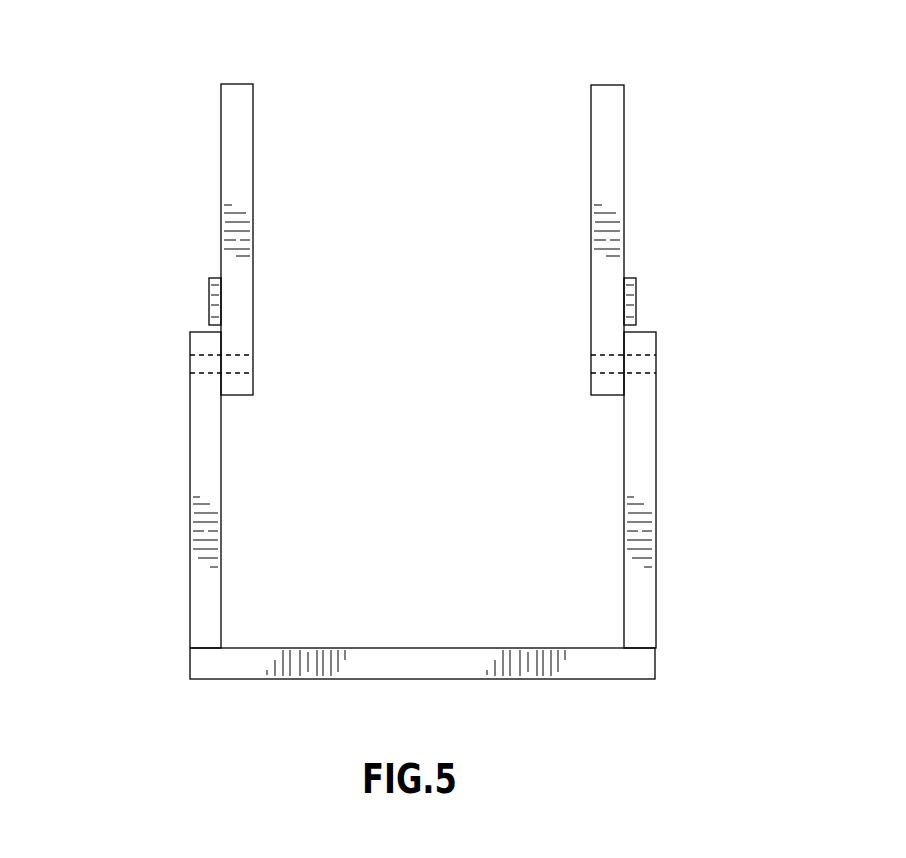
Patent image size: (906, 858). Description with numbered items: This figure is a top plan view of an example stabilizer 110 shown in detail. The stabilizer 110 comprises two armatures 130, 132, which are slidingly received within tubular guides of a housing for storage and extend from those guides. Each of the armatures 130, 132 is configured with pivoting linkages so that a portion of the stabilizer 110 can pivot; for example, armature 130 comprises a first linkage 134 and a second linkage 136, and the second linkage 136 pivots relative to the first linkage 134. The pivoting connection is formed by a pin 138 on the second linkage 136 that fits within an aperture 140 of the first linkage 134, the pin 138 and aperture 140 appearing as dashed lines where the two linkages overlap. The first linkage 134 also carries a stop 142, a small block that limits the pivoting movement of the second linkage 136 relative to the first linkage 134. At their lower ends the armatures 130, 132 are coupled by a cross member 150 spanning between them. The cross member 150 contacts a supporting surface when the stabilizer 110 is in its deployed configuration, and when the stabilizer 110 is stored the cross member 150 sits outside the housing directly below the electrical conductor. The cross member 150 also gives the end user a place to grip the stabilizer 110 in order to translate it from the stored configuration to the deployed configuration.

The stabilizer 110 is at (684, 105).
The armature 130 is at (97, 271).
The armature 132 is at (667, 223).
The first linkage 134 is at (245, 177).
The second linkage 136 is at (217, 466).
The pin 138 is at (190, 364).
The aperture 140 is at (240, 350).
The stop 142 is at (208, 305).
The cross member 150 is at (628, 668).